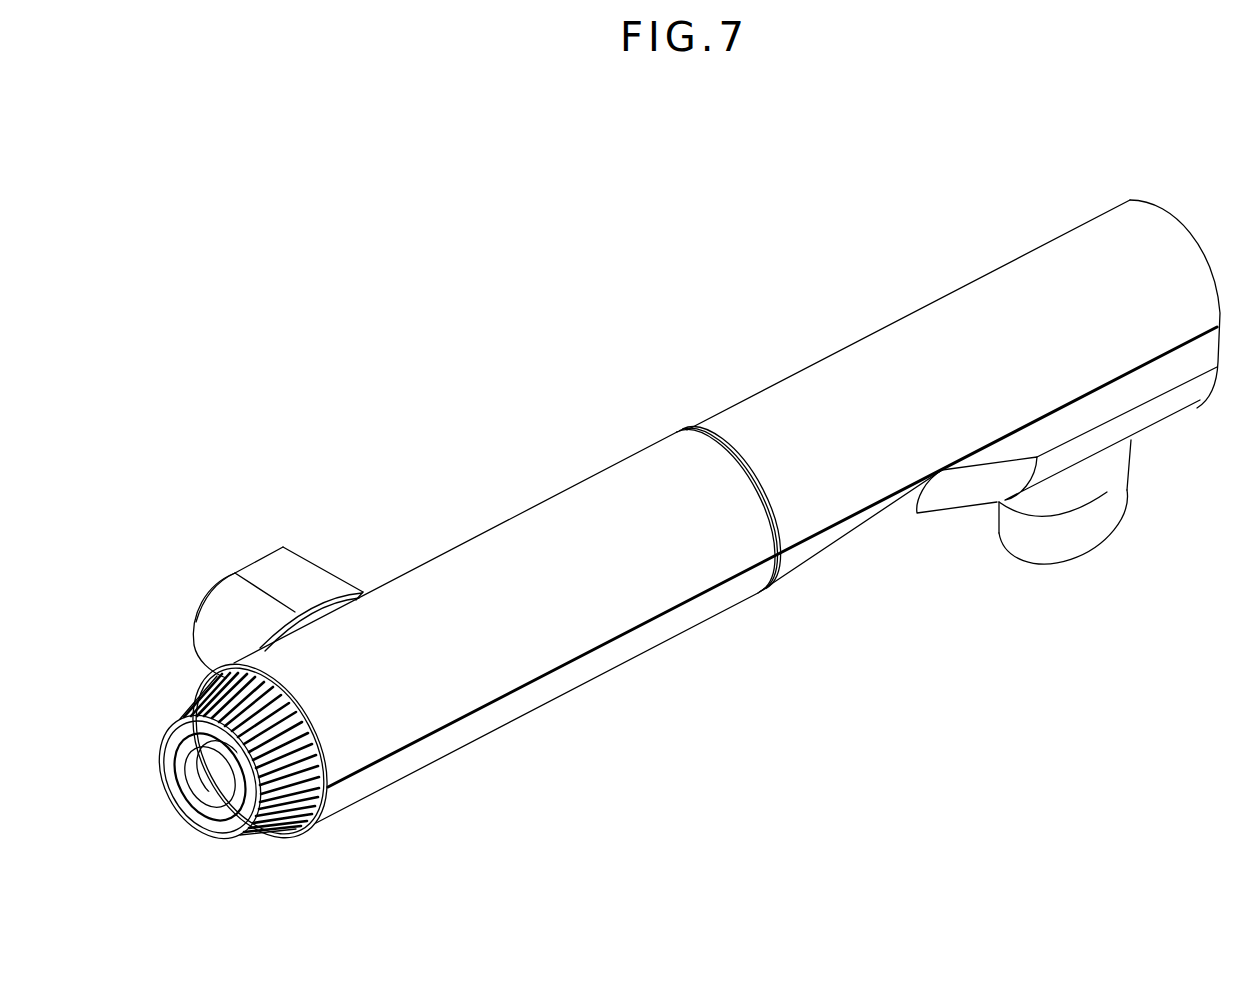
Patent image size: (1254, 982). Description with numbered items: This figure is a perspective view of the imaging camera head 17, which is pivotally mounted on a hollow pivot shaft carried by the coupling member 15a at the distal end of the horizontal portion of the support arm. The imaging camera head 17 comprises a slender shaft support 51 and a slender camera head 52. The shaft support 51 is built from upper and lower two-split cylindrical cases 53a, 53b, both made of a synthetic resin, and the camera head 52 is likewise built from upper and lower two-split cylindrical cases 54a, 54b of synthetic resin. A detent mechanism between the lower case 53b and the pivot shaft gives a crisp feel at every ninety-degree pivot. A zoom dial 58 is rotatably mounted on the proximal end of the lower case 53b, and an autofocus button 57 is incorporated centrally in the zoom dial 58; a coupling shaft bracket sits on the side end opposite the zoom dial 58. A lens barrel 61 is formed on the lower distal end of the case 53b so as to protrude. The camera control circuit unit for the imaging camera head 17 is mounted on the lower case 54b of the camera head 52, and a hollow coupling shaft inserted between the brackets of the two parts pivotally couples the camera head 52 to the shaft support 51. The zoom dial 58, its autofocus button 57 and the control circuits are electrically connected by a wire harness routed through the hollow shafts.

The imaging camera head 17 is at (593, 426).
The shaft support 51 is at (691, 593).
The camera head 52 is at (953, 408).
The upper case 53a is at (423, 582).
The lower case 53b is at (583, 667).
The upper case 54a is at (803, 380).
The lower case 54b is at (873, 517).
The coupling member 15a is at (290, 572).
The autofocus button 57 is at (203, 775).
The zoom dial 58 is at (278, 746).
The lens barrel 61 is at (1097, 495).